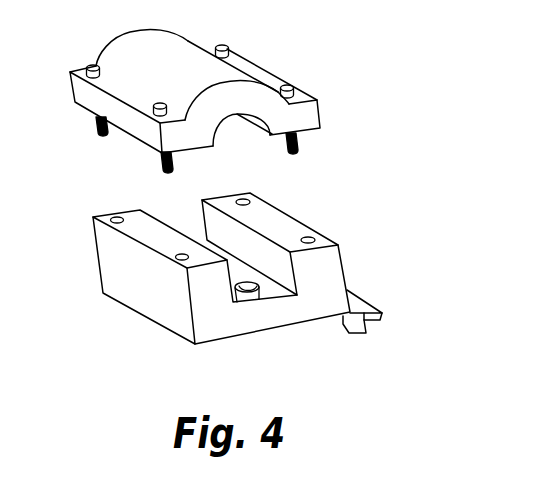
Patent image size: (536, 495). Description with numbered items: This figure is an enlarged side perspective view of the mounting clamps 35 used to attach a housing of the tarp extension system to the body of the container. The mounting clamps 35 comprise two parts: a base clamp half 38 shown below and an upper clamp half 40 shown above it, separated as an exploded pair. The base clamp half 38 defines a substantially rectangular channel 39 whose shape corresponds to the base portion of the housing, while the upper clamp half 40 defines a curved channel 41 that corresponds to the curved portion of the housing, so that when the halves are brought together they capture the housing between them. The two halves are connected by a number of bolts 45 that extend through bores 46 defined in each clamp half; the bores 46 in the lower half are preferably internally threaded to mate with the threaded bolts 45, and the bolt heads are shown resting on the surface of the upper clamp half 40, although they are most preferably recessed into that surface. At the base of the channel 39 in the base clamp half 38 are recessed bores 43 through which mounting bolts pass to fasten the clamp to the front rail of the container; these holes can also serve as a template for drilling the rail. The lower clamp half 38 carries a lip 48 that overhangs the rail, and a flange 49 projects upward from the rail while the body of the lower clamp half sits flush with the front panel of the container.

The mounting clamps 35 is at (347, 169).
The base clamp half 38 is at (337, 268).
The rectangular channel 39 is at (215, 227).
The upper clamp half 40 is at (276, 77).
The curved channel 41 is at (262, 121).
The recessed bores 43 is at (254, 301).
The bolts 45 is at (97, 128).
The bores 46 is at (182, 254).
The lip 48 is at (365, 332).
The flange 49 is at (382, 313).